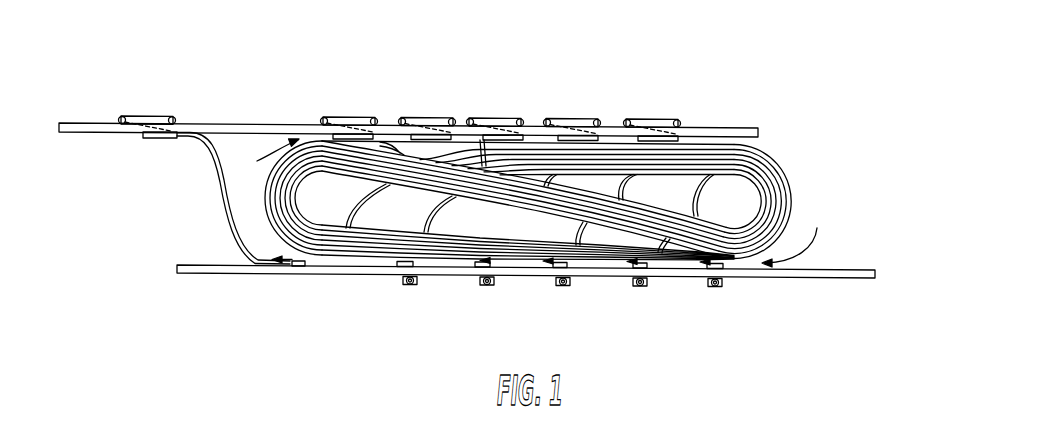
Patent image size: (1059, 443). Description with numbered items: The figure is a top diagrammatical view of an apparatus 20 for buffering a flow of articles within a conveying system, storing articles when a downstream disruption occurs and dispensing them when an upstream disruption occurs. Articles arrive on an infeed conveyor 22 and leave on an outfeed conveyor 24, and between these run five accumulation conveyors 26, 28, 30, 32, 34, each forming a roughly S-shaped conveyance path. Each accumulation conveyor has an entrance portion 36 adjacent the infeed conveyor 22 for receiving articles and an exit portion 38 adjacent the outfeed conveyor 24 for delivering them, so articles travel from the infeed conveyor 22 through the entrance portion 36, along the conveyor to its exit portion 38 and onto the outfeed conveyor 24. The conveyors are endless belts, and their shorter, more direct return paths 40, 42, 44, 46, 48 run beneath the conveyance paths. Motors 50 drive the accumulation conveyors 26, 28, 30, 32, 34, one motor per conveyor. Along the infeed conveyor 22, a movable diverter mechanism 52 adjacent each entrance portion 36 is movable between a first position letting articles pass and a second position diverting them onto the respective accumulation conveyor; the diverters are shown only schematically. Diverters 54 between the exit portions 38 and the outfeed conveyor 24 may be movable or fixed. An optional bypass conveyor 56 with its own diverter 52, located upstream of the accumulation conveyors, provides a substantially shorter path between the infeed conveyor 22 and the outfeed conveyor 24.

The apparatus 20 is at (664, 72).
The infeed conveyor 22 is at (72, 122).
The outfeed conveyor 24 is at (793, 278).
The accumulation conveyor 26 is at (728, 139).
The accumulation conveyor 28 is at (772, 147).
The accumulation conveyor 30 is at (740, 249).
The accumulation conveyor 32 is at (725, 249).
The accumulation conveyor 34 is at (702, 228).
The entrance portion 36 is at (263, 157).
The exit portion 38 is at (795, 235).
The return path 40 is at (703, 197).
The return path 42 is at (633, 178).
The return path 44 is at (553, 184).
The return path 46 is at (482, 136).
The return path 48 is at (360, 210).
The motor 50 is at (484, 285).
The diverter mechanism 52 is at (150, 117).
The diverter 54 is at (292, 266).
The bypass conveyor 56 is at (227, 226).